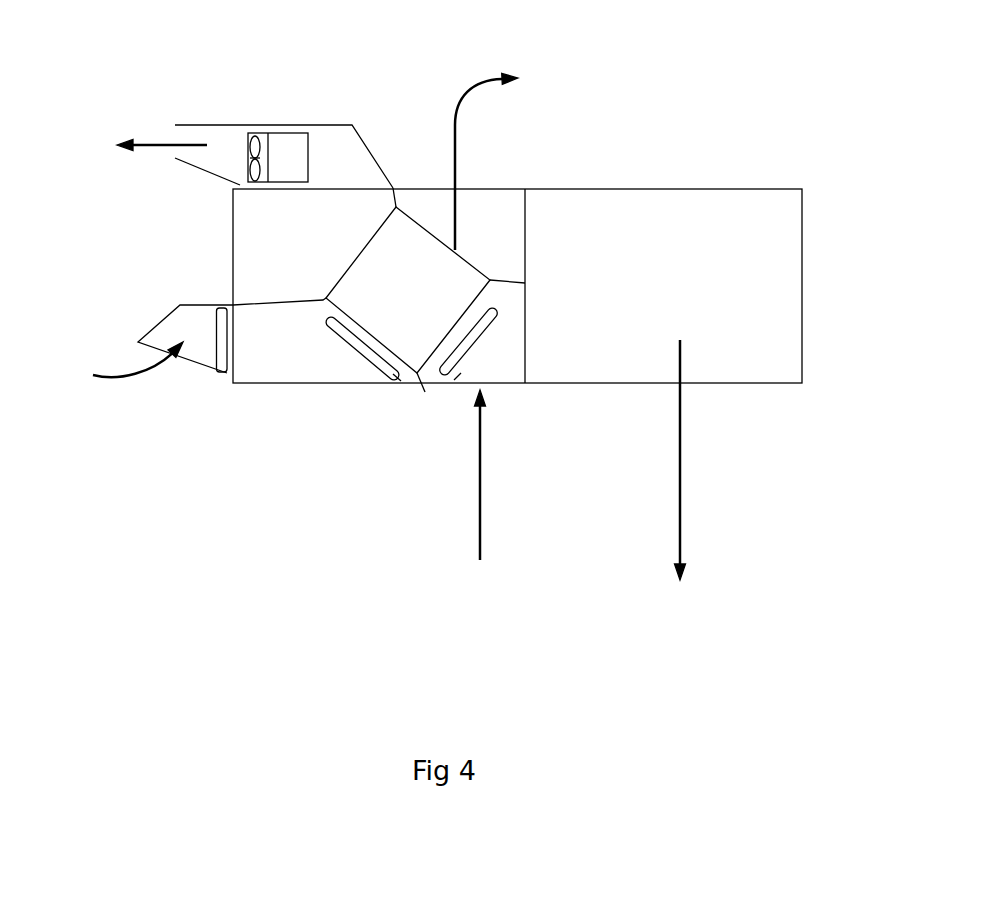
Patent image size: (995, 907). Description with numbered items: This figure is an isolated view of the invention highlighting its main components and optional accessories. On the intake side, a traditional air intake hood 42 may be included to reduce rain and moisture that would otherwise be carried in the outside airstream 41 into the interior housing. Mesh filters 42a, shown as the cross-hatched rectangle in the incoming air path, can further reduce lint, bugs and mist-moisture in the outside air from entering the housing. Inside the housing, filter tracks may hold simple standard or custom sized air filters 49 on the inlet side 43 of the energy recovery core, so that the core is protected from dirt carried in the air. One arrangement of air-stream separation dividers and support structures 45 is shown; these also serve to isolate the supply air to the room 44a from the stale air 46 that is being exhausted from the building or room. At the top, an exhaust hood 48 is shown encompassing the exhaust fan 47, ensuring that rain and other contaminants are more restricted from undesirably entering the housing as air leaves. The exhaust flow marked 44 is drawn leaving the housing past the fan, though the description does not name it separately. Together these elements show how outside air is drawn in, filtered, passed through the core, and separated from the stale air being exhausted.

The outside airstream 41 is at (138, 383).
The air intake hood 42 is at (161, 304).
The mesh filters 42a is at (208, 296).
The inlet side 43 is at (401, 344).
The exhaust air flow 44 is at (486, 147).
The supply air to the room 44a is at (715, 460).
The air-stream separation dividers and support structures 45 is at (540, 231).
The stale air 46 is at (492, 506).
The exhaust fan 47 is at (324, 127).
The exhaust hood 48 is at (242, 105).
The air filters 49 is at (452, 389).